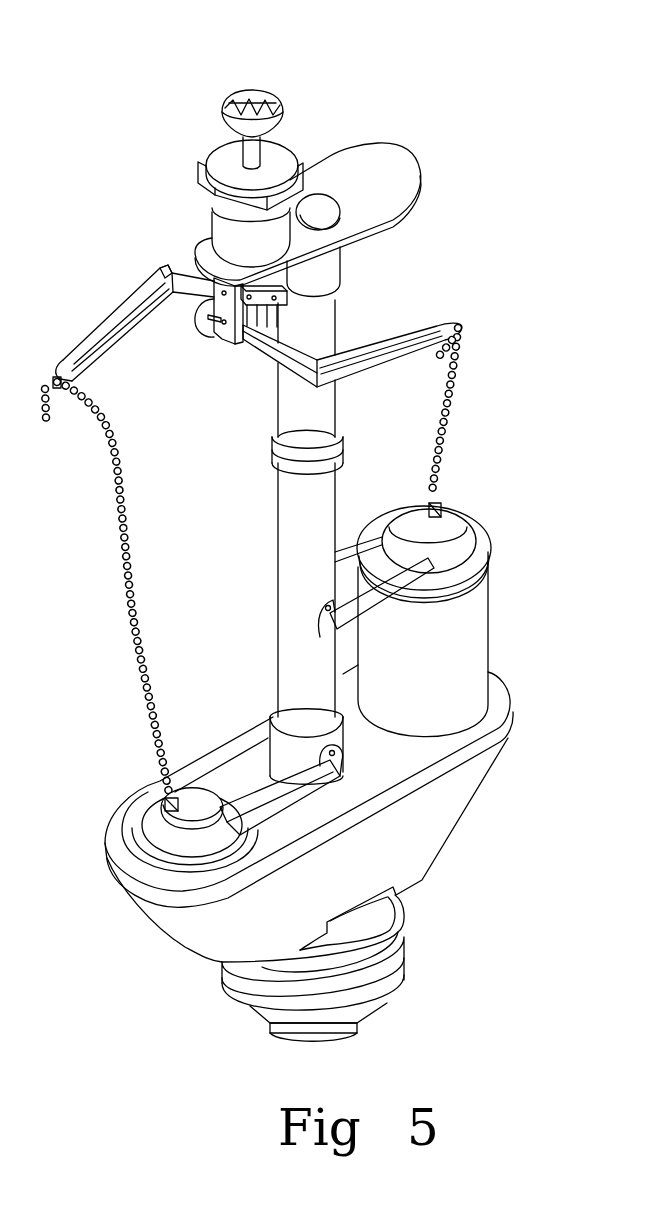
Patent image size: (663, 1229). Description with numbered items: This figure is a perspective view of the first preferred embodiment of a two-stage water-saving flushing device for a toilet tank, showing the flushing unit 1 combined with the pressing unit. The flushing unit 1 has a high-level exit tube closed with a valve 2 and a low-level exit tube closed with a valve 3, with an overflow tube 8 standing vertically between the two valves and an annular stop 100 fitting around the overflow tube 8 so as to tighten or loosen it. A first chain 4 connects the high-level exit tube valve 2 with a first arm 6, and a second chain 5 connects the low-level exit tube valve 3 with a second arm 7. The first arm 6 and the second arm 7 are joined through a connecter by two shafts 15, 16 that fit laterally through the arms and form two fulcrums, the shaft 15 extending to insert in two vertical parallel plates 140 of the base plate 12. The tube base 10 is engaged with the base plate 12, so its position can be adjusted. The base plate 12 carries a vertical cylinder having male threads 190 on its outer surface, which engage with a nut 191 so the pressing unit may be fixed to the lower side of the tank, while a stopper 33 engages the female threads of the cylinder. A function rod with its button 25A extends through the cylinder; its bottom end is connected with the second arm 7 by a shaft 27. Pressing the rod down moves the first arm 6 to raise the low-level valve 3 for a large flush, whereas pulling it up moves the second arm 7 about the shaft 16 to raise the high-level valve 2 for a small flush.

The flushing unit 1 is at (485, 815).
The high-level exit tube valve 2 is at (455, 542).
The low-level exit tube valve 3 is at (155, 828).
The first chain 4 is at (446, 425).
The second chain 5 is at (133, 647).
The first arm 6 is at (91, 328).
The second arm 7 is at (440, 322).
The overflow tube 8 is at (297, 558).
The tube base 10 is at (342, 272).
The base plate 12 is at (383, 173).
The shaft 15 is at (163, 276).
The shaft 16 is at (217, 324).
The button 25A is at (264, 101).
The shaft 27 is at (245, 338).
The stopper 33 is at (222, 152).
The annular stop 100 is at (270, 452).
The vertical parallel plates 140 is at (203, 318).
The male threads 190 is at (217, 222).
The nut 191 is at (205, 173).